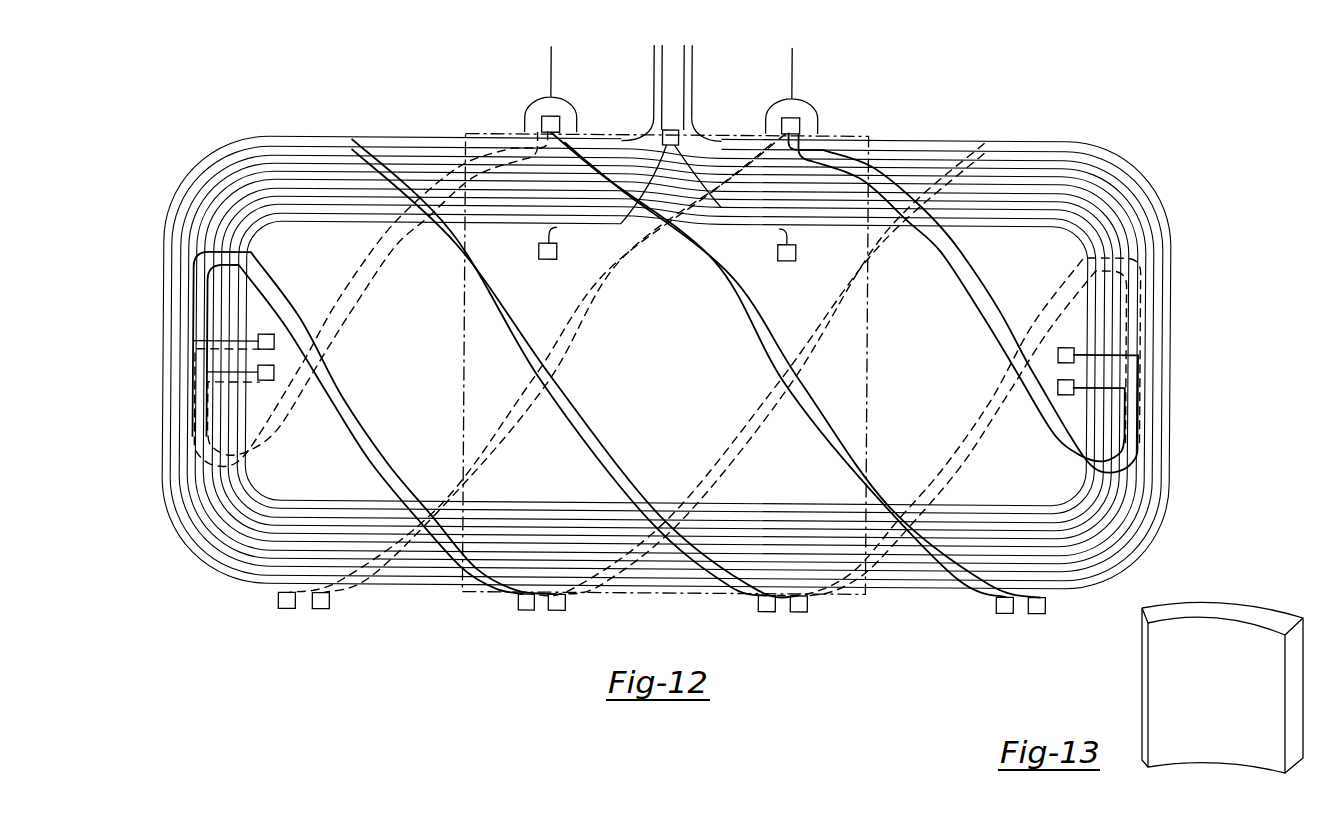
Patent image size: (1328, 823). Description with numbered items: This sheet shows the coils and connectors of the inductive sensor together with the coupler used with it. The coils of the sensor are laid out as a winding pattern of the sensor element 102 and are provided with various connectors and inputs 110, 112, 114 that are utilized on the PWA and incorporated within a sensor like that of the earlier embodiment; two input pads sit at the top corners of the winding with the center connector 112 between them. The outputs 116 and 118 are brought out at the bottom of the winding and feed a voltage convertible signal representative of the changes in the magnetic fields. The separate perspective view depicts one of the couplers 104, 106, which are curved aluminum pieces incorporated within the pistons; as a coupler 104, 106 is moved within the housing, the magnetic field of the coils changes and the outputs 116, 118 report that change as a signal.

In FIG. 12, the flexible circuit 102 is at (905, 628).
In FIG. 12, the coupler 104 is at (548, 478).
In FIG. 13, the coupler 104 is at (1222, 658).
In FIG. 13, the coupler 106 is at (1230, 618).
In FIG. 12, the connector/input 110 is at (545, 70).
In FIG. 12, the connector/input 112 is at (668, 45).
In FIG. 12, the connector/input 114 is at (795, 70).
In FIG. 12, the output 116 is at (1040, 612).
In FIG. 12, the output 118 is at (1006, 612).